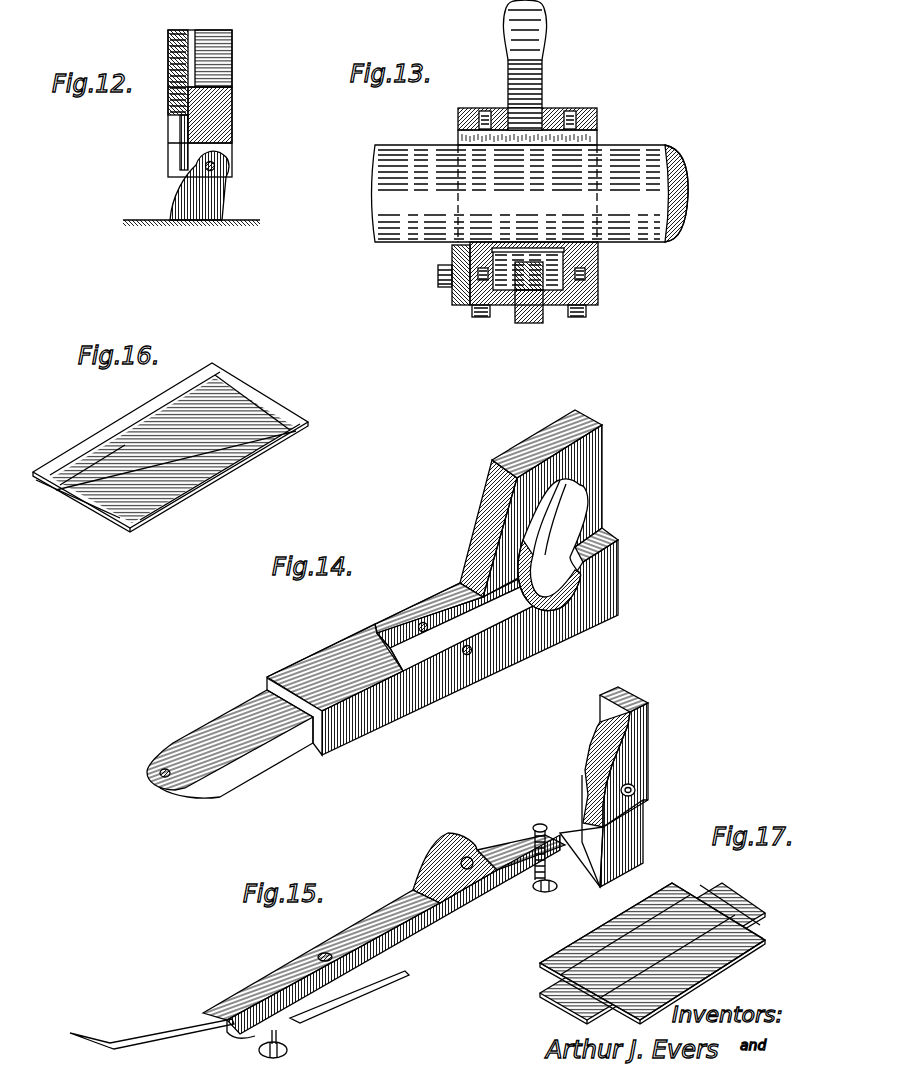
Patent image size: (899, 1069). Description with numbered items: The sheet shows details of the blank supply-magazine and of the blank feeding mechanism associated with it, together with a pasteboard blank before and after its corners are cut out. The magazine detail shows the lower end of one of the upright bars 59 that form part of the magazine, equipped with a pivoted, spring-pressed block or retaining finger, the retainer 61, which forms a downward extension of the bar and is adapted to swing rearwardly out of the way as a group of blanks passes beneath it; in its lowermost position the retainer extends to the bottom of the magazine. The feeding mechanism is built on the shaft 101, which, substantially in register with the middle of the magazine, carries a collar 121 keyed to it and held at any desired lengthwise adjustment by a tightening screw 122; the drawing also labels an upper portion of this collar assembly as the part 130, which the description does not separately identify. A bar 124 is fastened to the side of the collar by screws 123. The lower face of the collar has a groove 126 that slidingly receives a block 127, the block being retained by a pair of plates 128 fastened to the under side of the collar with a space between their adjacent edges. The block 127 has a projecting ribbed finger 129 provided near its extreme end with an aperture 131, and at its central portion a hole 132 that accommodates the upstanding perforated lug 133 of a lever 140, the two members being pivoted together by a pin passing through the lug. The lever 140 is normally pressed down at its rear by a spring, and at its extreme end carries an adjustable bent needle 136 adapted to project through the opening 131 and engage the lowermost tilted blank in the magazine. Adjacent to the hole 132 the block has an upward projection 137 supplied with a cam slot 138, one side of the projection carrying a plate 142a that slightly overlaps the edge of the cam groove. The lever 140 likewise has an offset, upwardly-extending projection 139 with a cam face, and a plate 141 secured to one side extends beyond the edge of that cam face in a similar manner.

In FIG. 12, the upright bar 59 is at (232, 56).
In FIG. 12, the spring-pressed retainer 61 is at (212, 201).
In FIG. 13, the shaft 101 is at (530, 193).
In FIG. 13, the collar 121 is at (598, 283).
In FIG. 13, the tightening screw 122 is at (543, 26).
In FIG. 13, the screws 123 is at (440, 286).
In FIG. 13, the bar 124 is at (452, 300).
In FIG. 13, the groove 126 is at (452, 257).
In FIG. 13, the block 127 is at (478, 318).
In FIG. 14, the block 127 is at (386, 604).
In FIG. 13, the plates 128 is at (500, 318).
In FIG. 14, the ribbed finger 129 is at (214, 742).
In FIG. 13, the upper clamp block 130 is at (598, 253).
In FIG. 14, the aperture 131 is at (163, 762).
In FIG. 14, the hole 132 is at (442, 590).
In FIG. 15, the perforated lug 133 is at (447, 838).
In FIG. 15, the bent needle 136 is at (108, 1020).
In FIG. 14, the upward projection 137 is at (529, 510).
In FIG. 14, the cam slot 138 is at (560, 517).
In FIG. 15, the upwardly-extending projection 139 is at (636, 778).
In FIG. 13, the lever 140 is at (530, 323).
In FIG. 15, the lever 140 is at (380, 864).
In FIG. 15, the plate 141 is at (637, 750).
In FIG. 14, the plate 142a is at (537, 518).